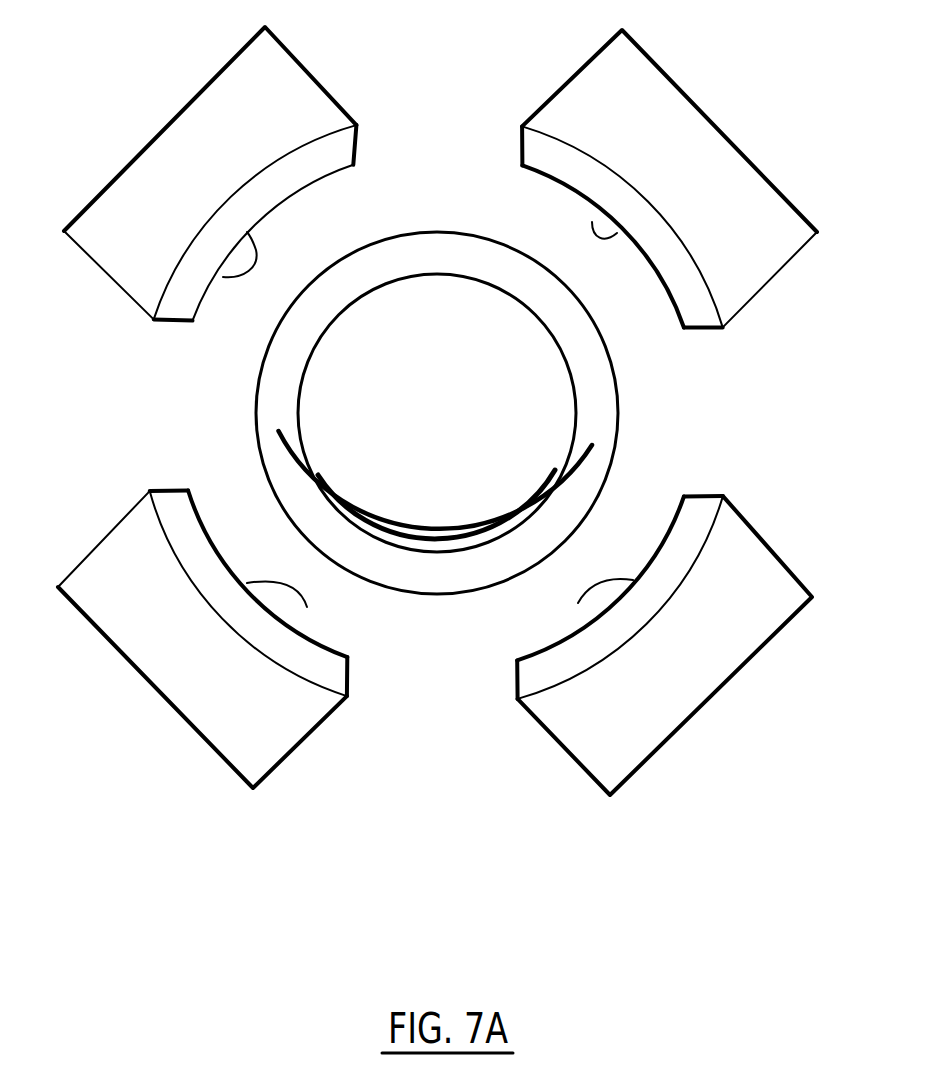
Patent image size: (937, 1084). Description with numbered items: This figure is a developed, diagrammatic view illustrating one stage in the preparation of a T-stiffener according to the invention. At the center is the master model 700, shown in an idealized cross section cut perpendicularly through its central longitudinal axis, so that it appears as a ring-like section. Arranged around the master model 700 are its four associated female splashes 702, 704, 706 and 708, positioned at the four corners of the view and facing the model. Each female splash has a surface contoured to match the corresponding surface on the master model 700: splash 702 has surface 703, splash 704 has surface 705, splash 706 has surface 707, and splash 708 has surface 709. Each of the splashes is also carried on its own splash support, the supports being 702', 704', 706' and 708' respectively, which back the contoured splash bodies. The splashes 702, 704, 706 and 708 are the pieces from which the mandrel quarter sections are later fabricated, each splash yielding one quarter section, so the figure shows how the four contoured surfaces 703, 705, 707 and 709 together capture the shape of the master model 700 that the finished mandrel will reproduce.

The master model 700 is at (457, 252).
The female splash 702 is at (210, 166).
The splash support 702' is at (219, 193).
The surface 703 is at (223, 277).
The female splash 704 is at (686, 179).
The splash support 704' is at (663, 200).
The surface 705 is at (592, 222).
The female splash 706 is at (686, 645).
The splash support 706' is at (653, 634).
The surface 707 is at (307, 607).
The female splash 708 is at (186, 640).
The splash support 708' is at (198, 630).
The surface 709 is at (578, 603).